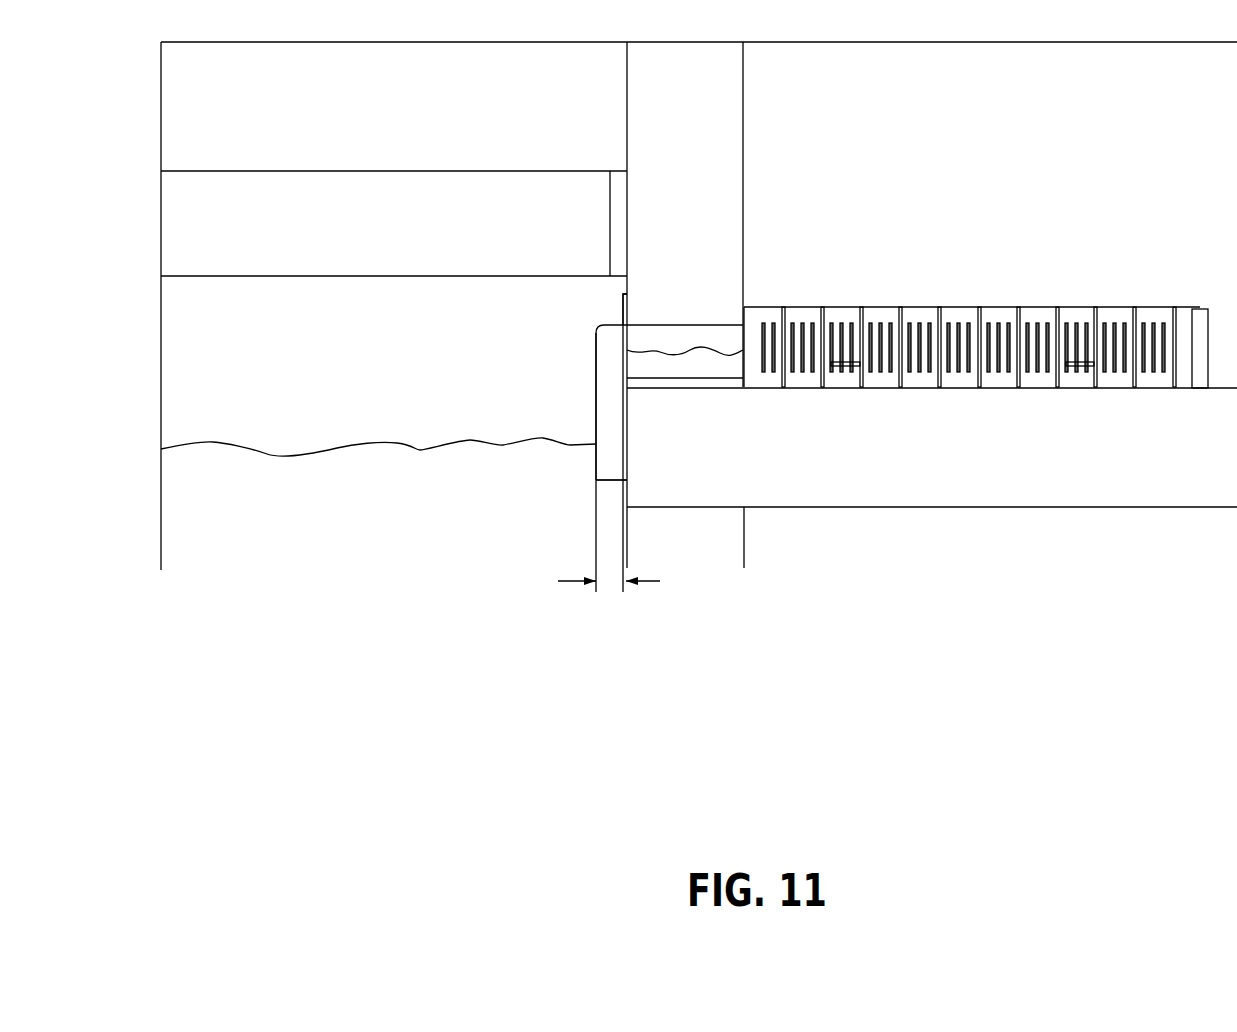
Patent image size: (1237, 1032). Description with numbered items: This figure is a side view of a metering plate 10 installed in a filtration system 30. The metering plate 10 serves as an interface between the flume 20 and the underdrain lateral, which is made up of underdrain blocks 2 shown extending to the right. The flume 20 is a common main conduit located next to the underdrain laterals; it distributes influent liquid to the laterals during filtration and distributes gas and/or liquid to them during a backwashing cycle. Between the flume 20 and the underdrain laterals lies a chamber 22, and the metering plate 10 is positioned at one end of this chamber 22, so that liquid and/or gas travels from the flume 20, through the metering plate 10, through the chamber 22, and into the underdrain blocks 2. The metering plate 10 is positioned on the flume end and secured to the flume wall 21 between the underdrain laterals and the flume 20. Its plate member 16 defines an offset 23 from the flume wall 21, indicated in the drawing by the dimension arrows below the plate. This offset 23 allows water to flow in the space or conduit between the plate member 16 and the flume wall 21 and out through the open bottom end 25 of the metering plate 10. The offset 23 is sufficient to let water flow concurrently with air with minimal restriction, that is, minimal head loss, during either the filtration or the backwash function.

The underdrain block 2 is at (1004, 303).
The metering plate 10 is at (586, 385).
The plate member 16 is at (596, 427).
The flume 20 is at (367, 373).
The flume wall 21 is at (625, 287).
The chamber 22 is at (690, 341).
The offset 23 is at (612, 582).
The bottom end 25 is at (610, 482).
The filtration system 30 is at (772, 199).